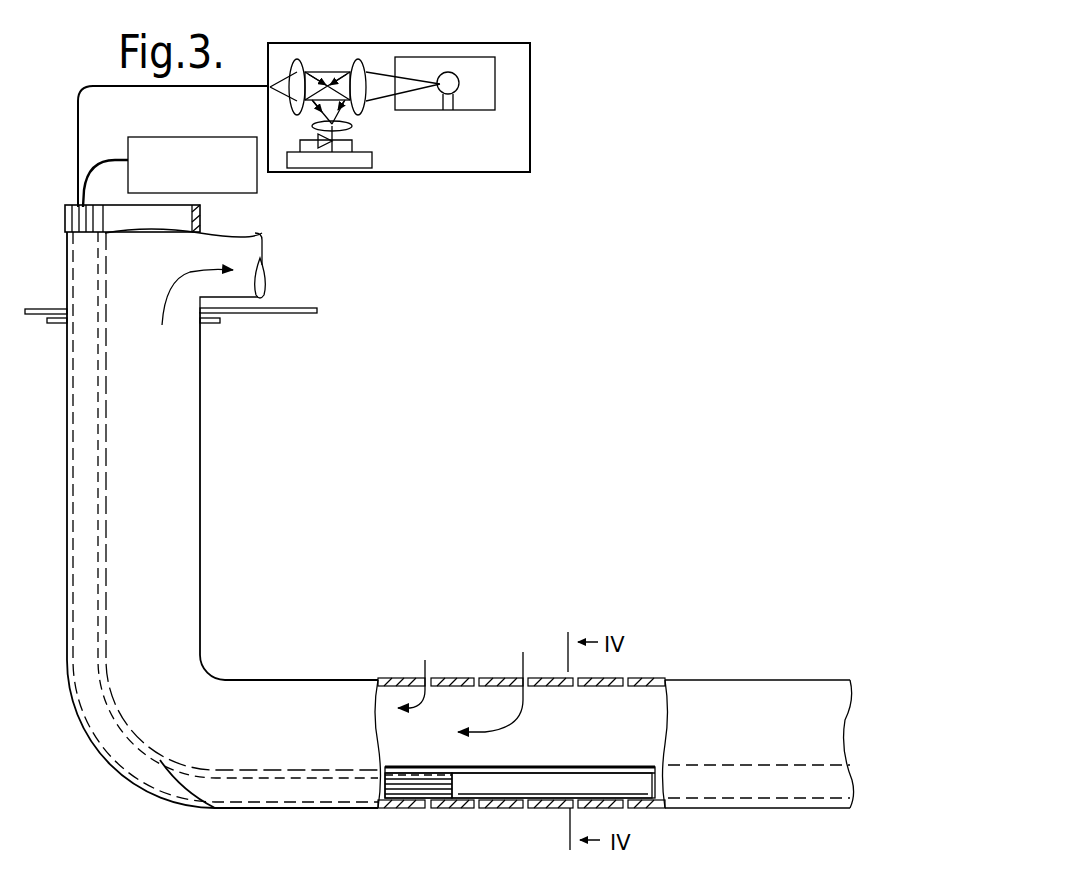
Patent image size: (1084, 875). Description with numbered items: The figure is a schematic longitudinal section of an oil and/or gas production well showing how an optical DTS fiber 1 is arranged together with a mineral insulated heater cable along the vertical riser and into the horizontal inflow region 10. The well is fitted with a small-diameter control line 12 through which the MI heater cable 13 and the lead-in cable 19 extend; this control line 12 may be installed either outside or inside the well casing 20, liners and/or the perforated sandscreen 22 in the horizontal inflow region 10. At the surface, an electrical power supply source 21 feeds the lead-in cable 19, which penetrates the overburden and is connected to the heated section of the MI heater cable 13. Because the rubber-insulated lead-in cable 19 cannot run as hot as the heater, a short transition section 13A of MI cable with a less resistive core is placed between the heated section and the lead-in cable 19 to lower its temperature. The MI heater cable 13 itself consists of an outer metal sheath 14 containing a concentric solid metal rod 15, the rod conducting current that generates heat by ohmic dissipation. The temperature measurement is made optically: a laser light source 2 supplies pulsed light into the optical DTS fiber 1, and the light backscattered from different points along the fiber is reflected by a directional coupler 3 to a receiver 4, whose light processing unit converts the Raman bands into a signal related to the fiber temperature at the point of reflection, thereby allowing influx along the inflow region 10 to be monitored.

The optical DTS fiber 1 is at (78, 160).
The laser light source 2 is at (455, 76).
The directional coupler 3 is at (322, 72).
The receiver 4 is at (345, 160).
The horizontal inflow region 10 is at (275, 703).
The control line 12 is at (108, 456).
The mineral insulated (MI) heater cable 13 is at (804, 792).
The transition section 13A is at (291, 797).
The outer metal sheath 14 is at (493, 792).
The solid metal rod 15 is at (115, 158).
The lead-in cable 19 is at (88, 537).
The well casing 20 is at (202, 569).
The electrical power supply source 21 is at (230, 183).
The perforated sandscreen 22 is at (448, 678).